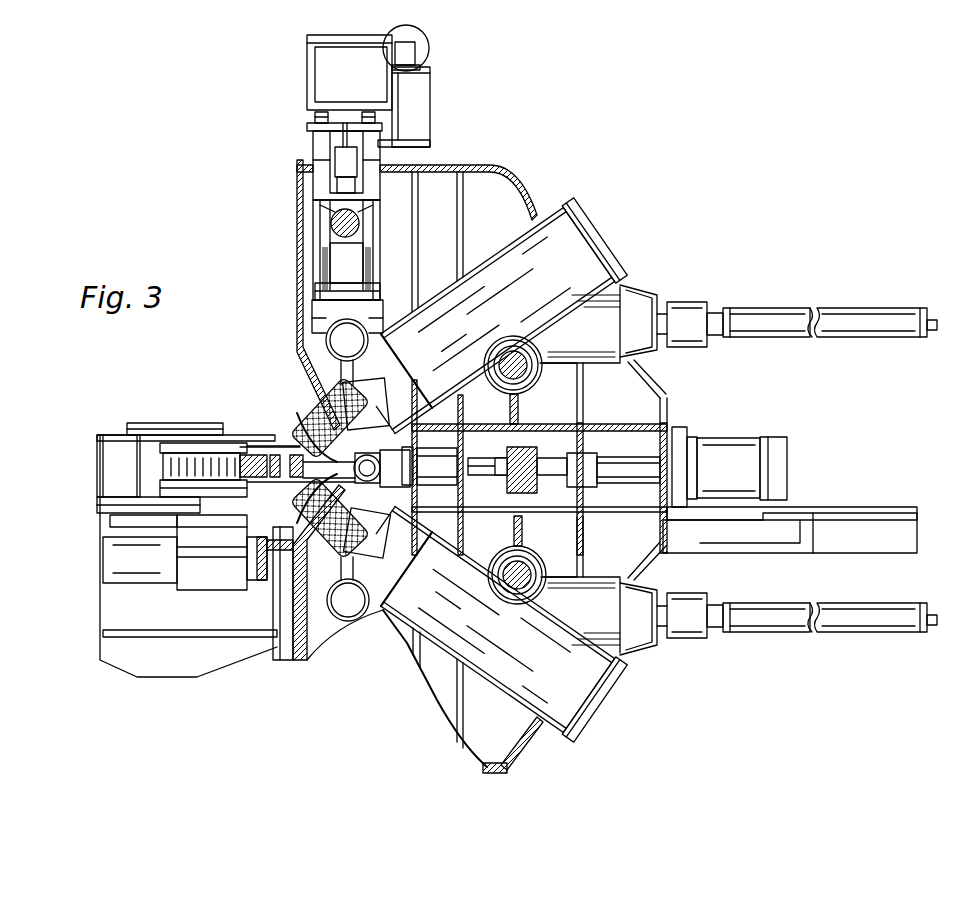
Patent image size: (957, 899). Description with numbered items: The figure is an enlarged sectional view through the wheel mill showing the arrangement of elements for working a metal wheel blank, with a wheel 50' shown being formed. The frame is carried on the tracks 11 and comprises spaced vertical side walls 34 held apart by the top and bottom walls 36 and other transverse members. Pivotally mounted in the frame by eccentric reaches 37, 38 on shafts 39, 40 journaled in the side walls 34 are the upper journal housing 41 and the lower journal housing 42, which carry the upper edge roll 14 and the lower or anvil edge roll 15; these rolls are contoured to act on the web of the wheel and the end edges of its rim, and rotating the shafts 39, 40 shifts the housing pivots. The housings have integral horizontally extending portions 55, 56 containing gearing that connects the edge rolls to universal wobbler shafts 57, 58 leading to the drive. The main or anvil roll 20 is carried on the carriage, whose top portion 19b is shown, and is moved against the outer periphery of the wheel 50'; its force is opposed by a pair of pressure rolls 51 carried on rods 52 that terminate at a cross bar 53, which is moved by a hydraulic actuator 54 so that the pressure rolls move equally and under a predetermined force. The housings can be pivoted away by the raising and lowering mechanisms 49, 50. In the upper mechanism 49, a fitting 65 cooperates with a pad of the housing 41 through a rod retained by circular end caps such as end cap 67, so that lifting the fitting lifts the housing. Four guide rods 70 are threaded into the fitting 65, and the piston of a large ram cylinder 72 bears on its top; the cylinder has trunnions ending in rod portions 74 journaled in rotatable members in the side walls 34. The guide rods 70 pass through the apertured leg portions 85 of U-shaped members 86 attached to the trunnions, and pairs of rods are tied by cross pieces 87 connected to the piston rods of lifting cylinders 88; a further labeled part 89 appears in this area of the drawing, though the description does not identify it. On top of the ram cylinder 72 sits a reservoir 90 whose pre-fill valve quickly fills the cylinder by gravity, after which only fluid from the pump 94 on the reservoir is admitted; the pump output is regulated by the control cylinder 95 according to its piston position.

The track 11 is at (905, 540).
The upper edge roll 14 is at (292, 447).
The lower or anvil edge roll 15 is at (330, 520).
The top portion of the carriage 19b is at (118, 450).
The main or anvil roll 20 is at (203, 466).
The side wall 34 is at (507, 733).
The top and bottom walls 36 is at (478, 167).
The eccentric reach 37 is at (522, 360).
The eccentric reach 38 is at (512, 588).
The shaft 39 is at (538, 358).
The shaft 40 is at (530, 587).
The upper journal housing 41 is at (485, 316).
The lower journal housing 42 is at (485, 623).
The raising and lowering mechanism 49 is at (262, 199).
The raising and lowering mechanism 50 is at (343, 629).
The wheel 50' is at (241, 425).
The pressure roll 51 is at (348, 448).
The rod 52 is at (477, 462).
The cross bar 53 is at (525, 450).
The hydraulic actuator 54 is at (718, 452).
The horizontally extending portion 55 is at (608, 303).
The horizontally extending portion 56 is at (615, 655).
The universal wobbler shaft 57 is at (760, 320).
The universal wobbler shaft 58 is at (765, 620).
The fitting 65 is at (328, 318).
The circular end cap 67 is at (340, 340).
The guide rod 70 is at (318, 268).
The ram cylinder 72 is at (343, 270).
The rod portion 74 is at (337, 233).
The apertured leg portion 85 is at (315, 153).
The U-shaped member 86 is at (372, 192).
The cross piece 87 is at (312, 118).
The lifting cylinder 88 is at (335, 172).
The bracket 89 is at (378, 122).
The reservoir 90 is at (307, 48).
The pump 94 is at (407, 35).
The control cylinder 95 is at (412, 58).